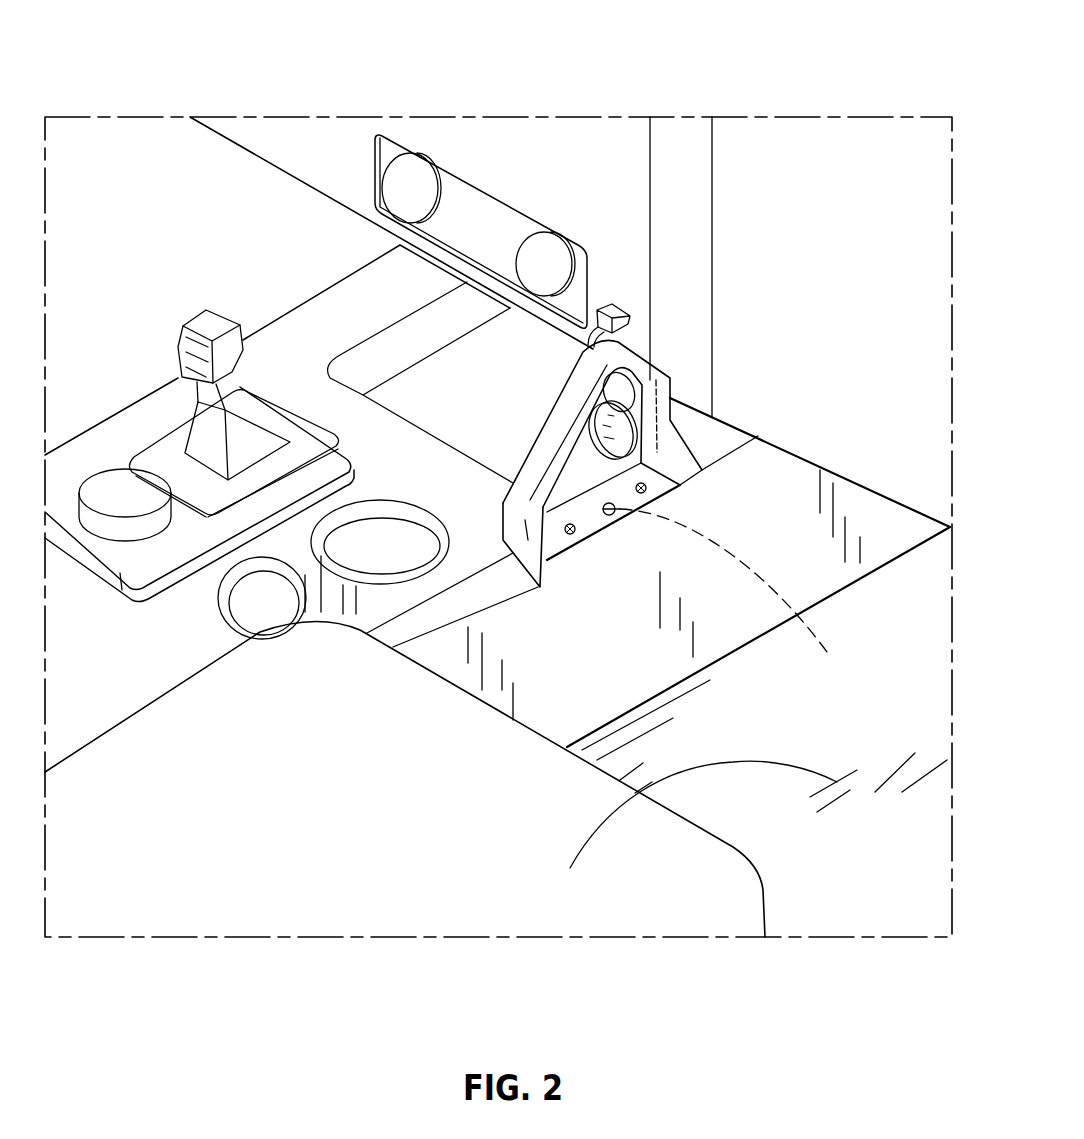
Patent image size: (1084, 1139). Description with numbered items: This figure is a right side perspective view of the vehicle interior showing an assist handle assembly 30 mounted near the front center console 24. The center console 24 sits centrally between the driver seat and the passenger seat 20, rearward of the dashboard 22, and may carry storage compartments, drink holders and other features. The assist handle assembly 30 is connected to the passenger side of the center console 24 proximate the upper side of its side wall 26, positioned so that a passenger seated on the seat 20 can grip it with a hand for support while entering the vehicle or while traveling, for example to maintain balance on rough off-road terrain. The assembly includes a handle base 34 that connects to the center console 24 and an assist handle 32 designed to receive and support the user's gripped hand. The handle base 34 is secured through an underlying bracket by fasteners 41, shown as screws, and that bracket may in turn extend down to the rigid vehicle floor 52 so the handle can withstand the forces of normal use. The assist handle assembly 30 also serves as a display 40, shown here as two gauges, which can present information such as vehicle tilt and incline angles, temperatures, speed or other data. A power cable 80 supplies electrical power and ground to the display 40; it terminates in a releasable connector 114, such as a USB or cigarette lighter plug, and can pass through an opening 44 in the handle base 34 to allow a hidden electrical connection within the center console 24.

The seat 20 is at (688, 867).
The dashboard 22 is at (458, 157).
The center console 24 is at (392, 457).
The side wall 26 is at (833, 512).
The assist handle assembly 30 is at (662, 333).
The assist handle 32 is at (570, 403).
The handle base 34 is at (704, 469).
The display 40 is at (580, 458).
The fasteners 41 is at (644, 486).
The opening 44 is at (721, 588).
The vehicle floor 52 is at (692, 830).
The power cable 80 is at (551, 252).
The releasable connector 114 is at (614, 305).